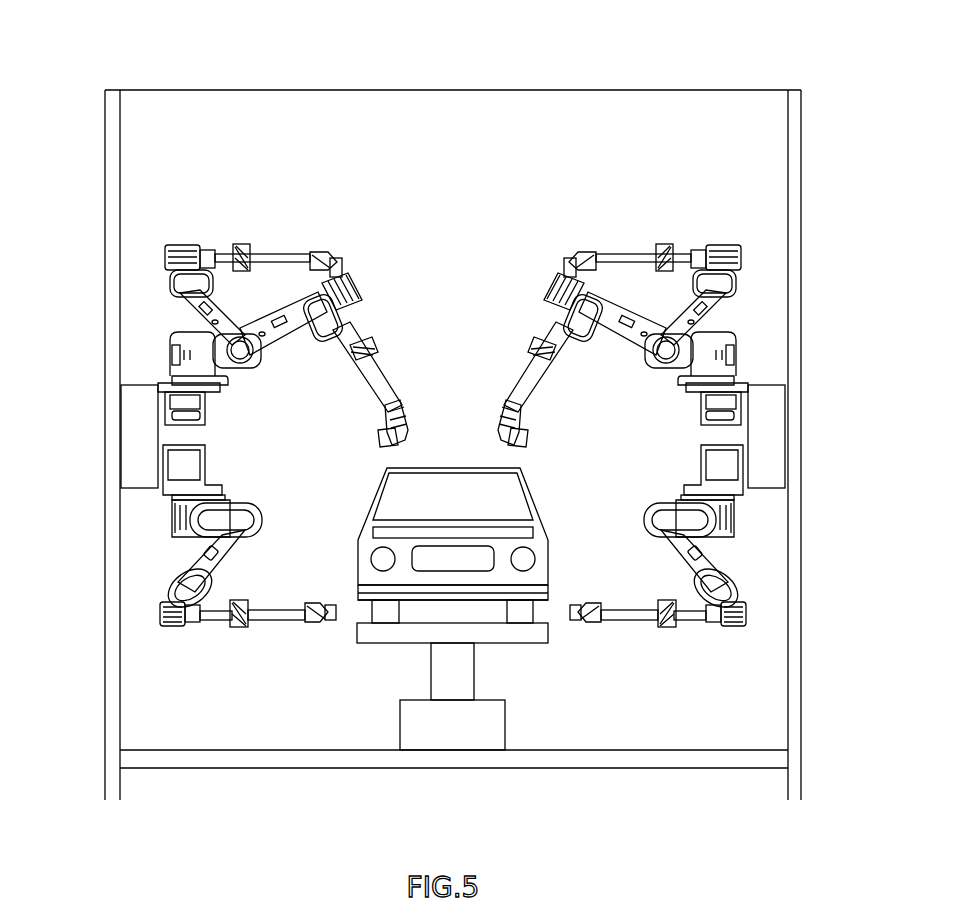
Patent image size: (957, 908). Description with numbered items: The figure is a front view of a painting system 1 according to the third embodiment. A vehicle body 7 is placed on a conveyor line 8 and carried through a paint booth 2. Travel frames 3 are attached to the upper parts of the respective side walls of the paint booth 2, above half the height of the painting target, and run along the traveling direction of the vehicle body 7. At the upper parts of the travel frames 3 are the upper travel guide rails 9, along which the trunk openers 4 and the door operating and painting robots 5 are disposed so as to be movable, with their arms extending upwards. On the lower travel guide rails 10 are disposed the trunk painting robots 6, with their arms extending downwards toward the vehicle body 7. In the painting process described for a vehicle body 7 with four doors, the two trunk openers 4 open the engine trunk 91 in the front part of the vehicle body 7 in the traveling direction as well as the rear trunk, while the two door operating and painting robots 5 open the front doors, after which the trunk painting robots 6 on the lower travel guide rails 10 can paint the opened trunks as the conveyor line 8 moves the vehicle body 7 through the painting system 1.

The painting system 1 is at (443, 120).
The paint booth 2 is at (792, 235).
The travel frames 3 is at (140, 430).
The trunk openers 4 is at (280, 255).
The door operating and painting robots 5 is at (360, 300).
The trunk painting robots 6 is at (190, 615).
The vehicle body 7 is at (548, 533).
The conveyor line 8 is at (428, 730).
The travel guide rails 9 is at (165, 385).
The travel guide rails 10 is at (162, 480).
The engine trunk 91 is at (452, 535).